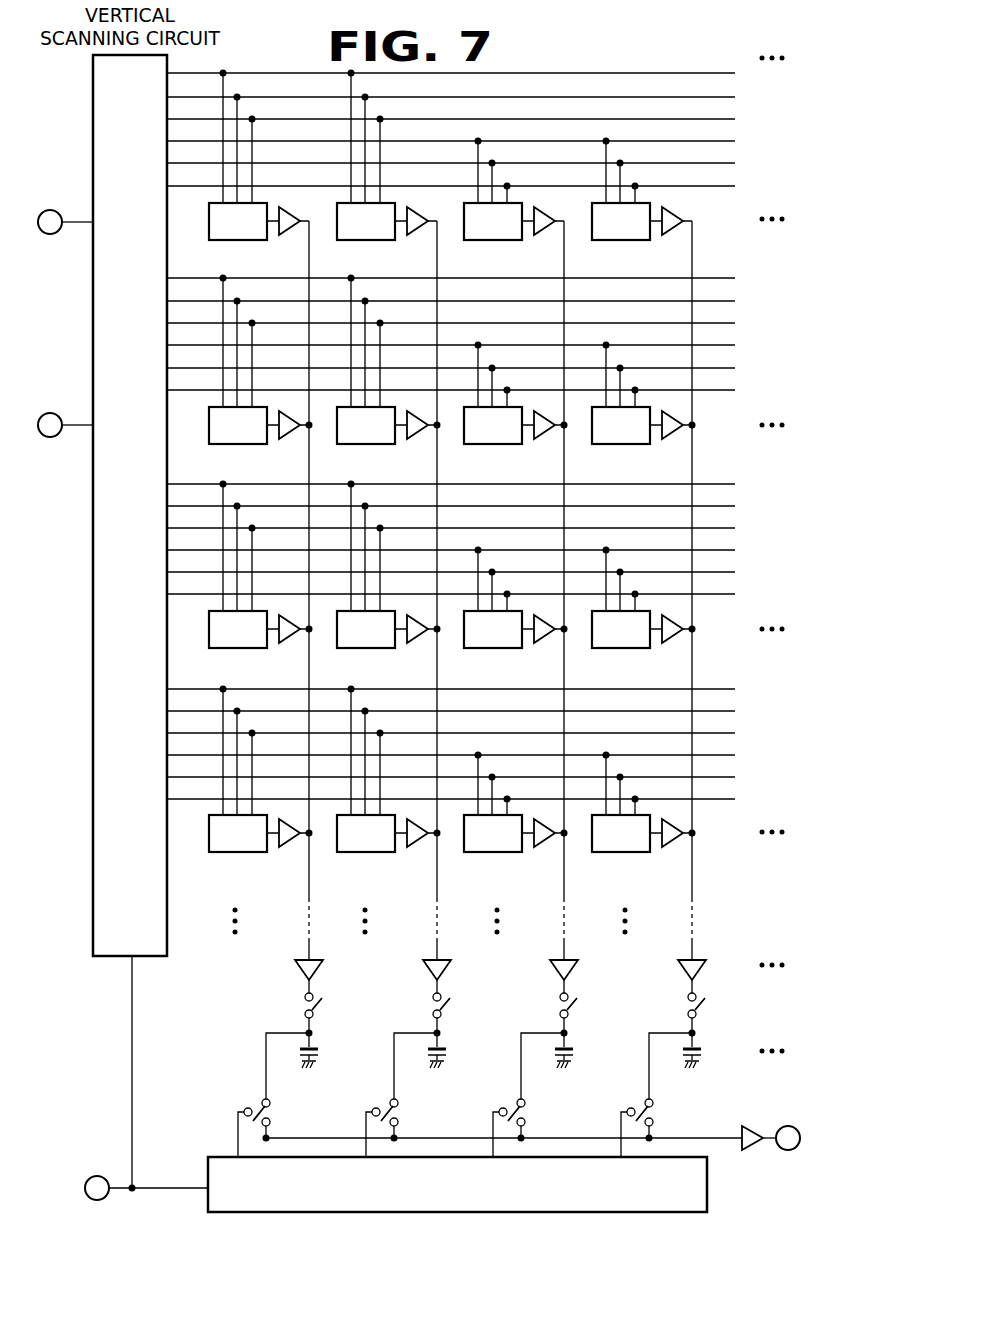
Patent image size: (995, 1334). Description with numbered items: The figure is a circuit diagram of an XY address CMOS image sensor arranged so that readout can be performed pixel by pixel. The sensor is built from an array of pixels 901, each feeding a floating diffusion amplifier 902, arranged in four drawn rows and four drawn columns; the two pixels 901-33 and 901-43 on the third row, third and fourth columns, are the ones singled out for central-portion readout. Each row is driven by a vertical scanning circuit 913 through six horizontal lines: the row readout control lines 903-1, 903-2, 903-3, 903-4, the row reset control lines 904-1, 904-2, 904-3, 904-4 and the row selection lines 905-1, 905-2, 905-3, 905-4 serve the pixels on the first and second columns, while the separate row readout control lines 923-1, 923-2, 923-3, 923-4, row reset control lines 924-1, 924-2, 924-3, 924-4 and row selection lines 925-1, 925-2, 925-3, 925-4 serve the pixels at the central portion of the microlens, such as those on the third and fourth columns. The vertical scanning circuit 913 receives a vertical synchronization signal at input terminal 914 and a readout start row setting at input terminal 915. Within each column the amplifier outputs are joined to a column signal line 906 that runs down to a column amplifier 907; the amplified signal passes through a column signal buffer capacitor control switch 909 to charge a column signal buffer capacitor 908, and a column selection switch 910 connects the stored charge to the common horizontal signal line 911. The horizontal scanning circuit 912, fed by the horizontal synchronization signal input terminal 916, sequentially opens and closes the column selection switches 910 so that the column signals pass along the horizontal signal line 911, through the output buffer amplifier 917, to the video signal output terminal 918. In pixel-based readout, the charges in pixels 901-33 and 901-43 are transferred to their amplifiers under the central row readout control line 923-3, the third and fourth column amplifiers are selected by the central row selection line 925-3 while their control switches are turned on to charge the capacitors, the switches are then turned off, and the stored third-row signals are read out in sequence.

The pixel 901 is at (220, 240).
The pixel (third row, third column) 901-33 is at (495, 648).
The pixel (third row, fourth column) 901-43 is at (625, 648).
The floating diffusion amplifier 902 is at (285, 233).
The row readout control line 903-1 is at (417, 73).
The row reset control line 904-1 is at (417, 97).
The row selection line 905-1 is at (417, 119).
The row readout control line for central-portion pixels 923-1 is at (417, 141).
The row reset control line for central-portion pixels 924-1 is at (417, 163).
The row selection line for central-portion pixels 925-1 is at (417, 186).
The row readout control line 903-2 is at (417, 278).
The row reset control line 904-2 is at (417, 301).
The row selection line 905-2 is at (417, 323).
The row readout control line for central-portion pixels 923-2 is at (417, 345).
The row reset control line for central-portion pixels 924-2 is at (417, 368).
The row selection line for central-portion pixels 925-2 is at (417, 390).
The row readout control line 903-3 is at (417, 484).
The row reset control line 904-3 is at (417, 506).
The row selection line 905-3 is at (417, 528).
The central row readout control line 923-3 is at (417, 550).
The row reset control line for central-portion pixels 924-3 is at (417, 572).
The central row selection line 925-3 is at (417, 594).
The row readout control line 903-4 is at (417, 689).
The row reset control line 904-4 is at (417, 711).
The row selection line 905-4 is at (417, 733).
The row readout control line for central-portion pixels 923-4 is at (417, 755).
The row reset control line for central-portion pixels 924-4 is at (417, 777).
The row selection line for central-portion pixels 925-4 is at (417, 799).
The column signal line 906 is at (309, 862).
The column amplifier 907 is at (295, 968).
The column signal buffer capacitor 908 is at (306, 1073).
The column signal buffer capacitor control switch 909 is at (322, 1007).
The column selection switch 910 is at (255, 1099).
The horizontal signal line 911 is at (690, 1138).
The horizontal scanning circuit 912 is at (707, 1200).
The vertical scanning circuit 913 is at (105, 958).
The vertical synchronization signal input terminal 914 is at (58, 235).
The readout start row setting input terminal 915 is at (58, 438).
The horizontal synchronization signal input terminal 916 is at (97, 1176).
The output buffer amplifier 917 is at (750, 1126).
The video signal output terminal 918 is at (789, 1126).